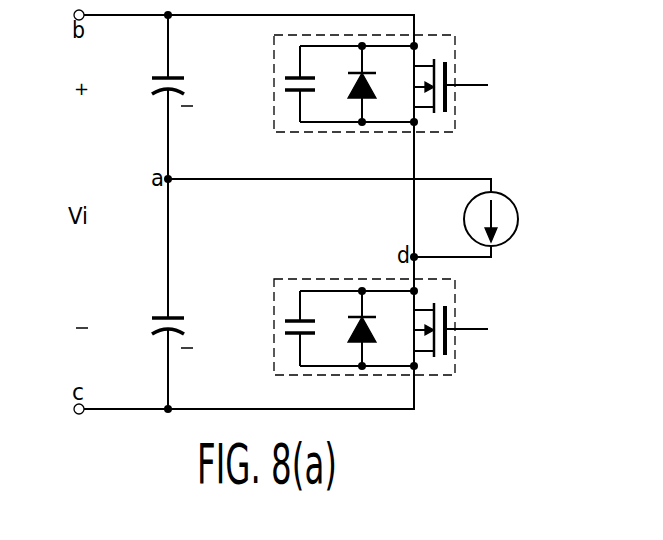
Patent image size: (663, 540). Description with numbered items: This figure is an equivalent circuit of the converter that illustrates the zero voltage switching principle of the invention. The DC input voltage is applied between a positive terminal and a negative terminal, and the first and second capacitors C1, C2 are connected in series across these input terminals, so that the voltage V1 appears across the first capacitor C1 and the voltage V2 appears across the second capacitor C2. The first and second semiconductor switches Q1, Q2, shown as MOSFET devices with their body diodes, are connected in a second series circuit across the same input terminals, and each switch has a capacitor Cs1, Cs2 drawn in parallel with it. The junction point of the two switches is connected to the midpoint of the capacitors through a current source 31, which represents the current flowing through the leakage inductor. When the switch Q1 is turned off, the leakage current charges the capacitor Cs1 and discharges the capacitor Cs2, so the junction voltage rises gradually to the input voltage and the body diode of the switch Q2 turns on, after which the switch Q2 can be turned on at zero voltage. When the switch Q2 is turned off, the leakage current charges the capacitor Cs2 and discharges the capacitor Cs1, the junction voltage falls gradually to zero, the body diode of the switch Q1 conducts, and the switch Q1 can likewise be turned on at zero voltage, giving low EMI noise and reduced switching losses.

The current source 31 is at (513, 201).
The first semiconductor switch Q1 is at (451, 321).
The second semiconductor switch Q2 is at (451, 76).
The first capacitor C1 is at (154, 325).
The second capacitor C2 is at (154, 85).
The capacitor Cs1 is at (364, 343).
The capacitor Cs2 is at (364, 99).
The voltage across first capacitor V1 is at (198, 321).
The voltage across second capacitor V2 is at (198, 80).